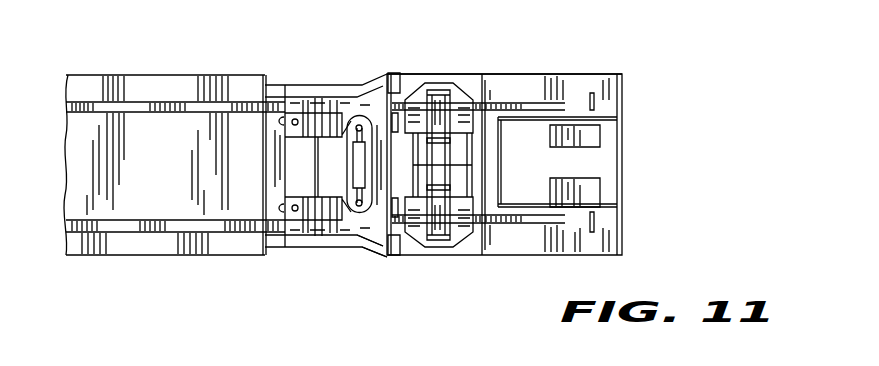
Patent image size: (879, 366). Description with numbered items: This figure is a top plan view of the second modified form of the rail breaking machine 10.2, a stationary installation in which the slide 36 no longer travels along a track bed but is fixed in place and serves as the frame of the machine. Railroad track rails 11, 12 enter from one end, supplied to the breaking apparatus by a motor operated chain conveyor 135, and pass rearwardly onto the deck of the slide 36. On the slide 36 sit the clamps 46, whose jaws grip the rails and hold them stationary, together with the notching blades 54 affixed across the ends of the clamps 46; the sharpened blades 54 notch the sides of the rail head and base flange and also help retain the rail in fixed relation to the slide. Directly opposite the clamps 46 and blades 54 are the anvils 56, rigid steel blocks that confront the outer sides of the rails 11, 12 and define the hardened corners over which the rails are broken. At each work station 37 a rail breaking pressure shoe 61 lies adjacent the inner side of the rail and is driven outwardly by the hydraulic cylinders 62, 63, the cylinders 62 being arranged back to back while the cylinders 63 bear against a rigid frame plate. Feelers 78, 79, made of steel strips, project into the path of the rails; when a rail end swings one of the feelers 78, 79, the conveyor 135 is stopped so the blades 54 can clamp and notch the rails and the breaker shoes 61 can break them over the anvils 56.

The railroad track rail 11 is at (152, 102).
The railroad track rail 12 is at (163, 232).
The motor operated chain conveyor 135 is at (247, 75).
The clamp 46 is at (370, 235).
The slide 36 is at (385, 253).
The work station 37 is at (452, 65).
The machine 10.2 is at (478, 68).
The anvil 56 is at (395, 78).
The notching blade 54 is at (398, 218).
The rail breaking pressure shoe 61 is at (440, 123).
The hydraulic cylinder 62 is at (443, 152).
The hydraulic cylinder 63 is at (445, 178).
The feeler 78 is at (598, 102).
The feeler 79 is at (598, 222).